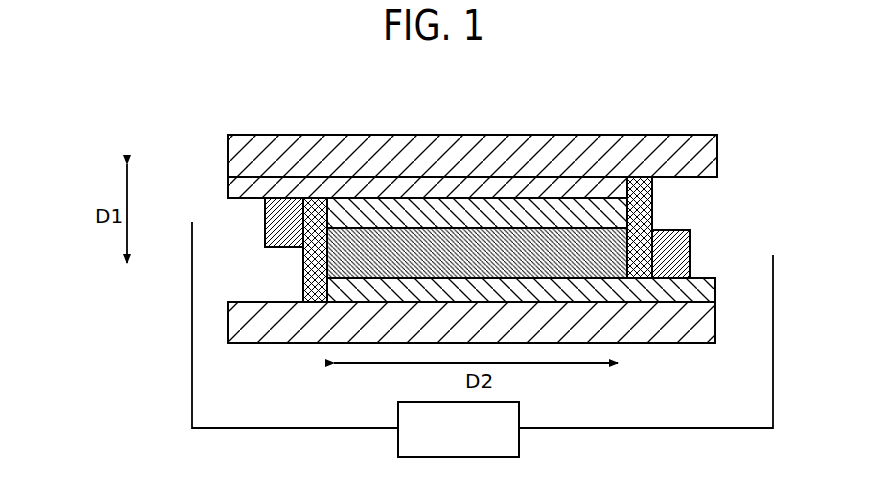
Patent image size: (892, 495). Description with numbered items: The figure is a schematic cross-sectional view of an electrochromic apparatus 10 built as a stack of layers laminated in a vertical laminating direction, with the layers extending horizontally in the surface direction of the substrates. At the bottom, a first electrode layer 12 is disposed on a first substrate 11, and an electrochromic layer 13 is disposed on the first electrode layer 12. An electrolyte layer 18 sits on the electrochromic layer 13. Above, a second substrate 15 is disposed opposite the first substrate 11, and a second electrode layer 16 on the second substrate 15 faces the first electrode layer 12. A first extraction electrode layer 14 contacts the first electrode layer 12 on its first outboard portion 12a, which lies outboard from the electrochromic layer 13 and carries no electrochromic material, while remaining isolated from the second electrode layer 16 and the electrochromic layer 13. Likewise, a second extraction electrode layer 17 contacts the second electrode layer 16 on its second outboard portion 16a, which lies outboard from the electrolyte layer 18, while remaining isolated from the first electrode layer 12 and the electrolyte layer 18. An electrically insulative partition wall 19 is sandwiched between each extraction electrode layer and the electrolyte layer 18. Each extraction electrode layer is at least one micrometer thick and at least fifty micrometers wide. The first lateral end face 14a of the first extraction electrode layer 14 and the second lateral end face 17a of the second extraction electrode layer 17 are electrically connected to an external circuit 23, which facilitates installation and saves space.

The electrochromic apparatus 10 is at (630, 110).
The first substrate 11 is at (708, 324).
The first electrode layer 12 is at (719, 290).
The first outboard portion 12a is at (677, 290).
The electrochromic layer 13 is at (582, 265).
The first extraction electrode layer 14 is at (694, 232).
The first lateral end face 14a is at (690, 241).
The second substrate 15 is at (228, 160).
The second electrode layer 16 is at (226, 188).
The second outboard portion 16a is at (280, 190).
The second extraction electrode layer 17 is at (263, 244).
The second lateral end face 17a is at (264, 240).
The electrolyte layer 18 is at (535, 217).
The partition wall 19 is at (303, 283).
The external circuit 23 is at (497, 458).